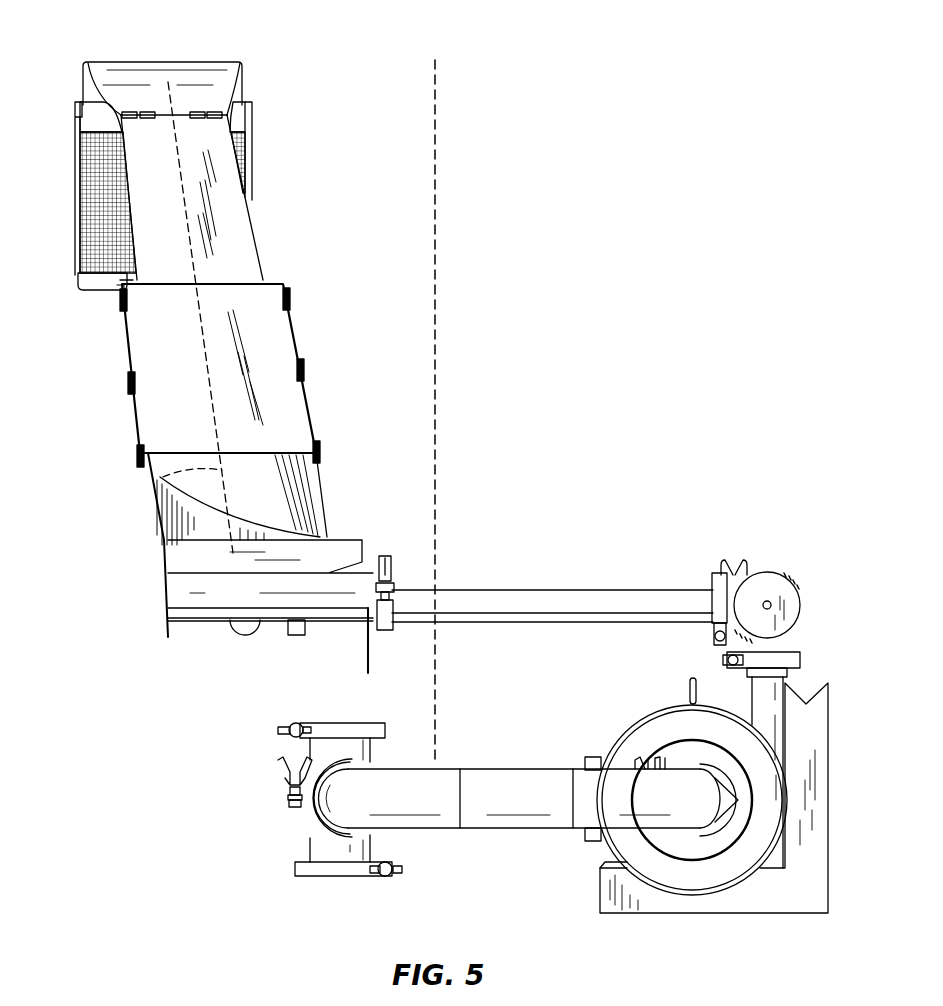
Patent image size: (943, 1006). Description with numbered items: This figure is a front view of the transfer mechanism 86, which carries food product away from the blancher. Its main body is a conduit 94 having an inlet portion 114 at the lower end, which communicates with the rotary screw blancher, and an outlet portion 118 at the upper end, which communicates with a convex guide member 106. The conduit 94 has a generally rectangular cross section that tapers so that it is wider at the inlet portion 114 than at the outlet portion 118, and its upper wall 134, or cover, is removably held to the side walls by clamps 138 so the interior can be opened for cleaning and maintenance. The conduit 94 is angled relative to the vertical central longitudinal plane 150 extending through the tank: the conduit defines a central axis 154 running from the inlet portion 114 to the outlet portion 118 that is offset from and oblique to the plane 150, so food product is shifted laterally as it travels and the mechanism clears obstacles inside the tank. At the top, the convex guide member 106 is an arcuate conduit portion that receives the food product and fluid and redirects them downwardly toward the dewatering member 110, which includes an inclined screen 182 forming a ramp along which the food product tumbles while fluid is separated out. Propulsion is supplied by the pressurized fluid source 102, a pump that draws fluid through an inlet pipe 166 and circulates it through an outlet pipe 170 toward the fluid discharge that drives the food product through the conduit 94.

The transfer mechanism 86 is at (550, 85).
The convex guide member 106 is at (145, 77).
The outlet portion 118 is at (203, 138).
The dewatering member 110 is at (253, 155).
The upper wall 134 is at (220, 220).
The conduit 94 is at (240, 263).
The screen 182 is at (90, 197).
The clamps 138 is at (120, 298).
The central longitudinal plane 150 is at (437, 256).
The central axis 154 is at (160, 480).
The inlet portion 114 is at (290, 515).
The outlet pipe 170 is at (540, 595).
The inlet pipe 166 is at (507, 780).
The pressurized fluid source 102 is at (692, 873).